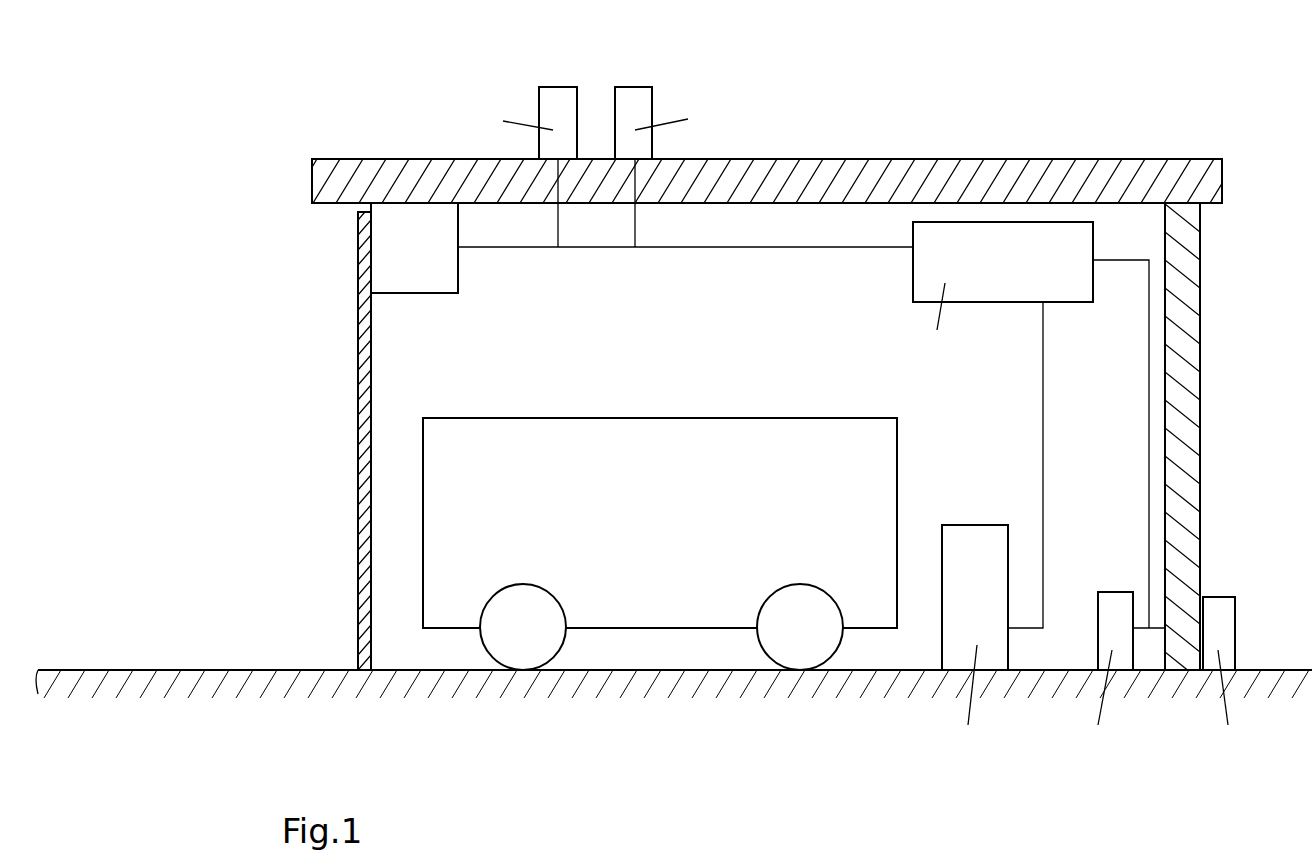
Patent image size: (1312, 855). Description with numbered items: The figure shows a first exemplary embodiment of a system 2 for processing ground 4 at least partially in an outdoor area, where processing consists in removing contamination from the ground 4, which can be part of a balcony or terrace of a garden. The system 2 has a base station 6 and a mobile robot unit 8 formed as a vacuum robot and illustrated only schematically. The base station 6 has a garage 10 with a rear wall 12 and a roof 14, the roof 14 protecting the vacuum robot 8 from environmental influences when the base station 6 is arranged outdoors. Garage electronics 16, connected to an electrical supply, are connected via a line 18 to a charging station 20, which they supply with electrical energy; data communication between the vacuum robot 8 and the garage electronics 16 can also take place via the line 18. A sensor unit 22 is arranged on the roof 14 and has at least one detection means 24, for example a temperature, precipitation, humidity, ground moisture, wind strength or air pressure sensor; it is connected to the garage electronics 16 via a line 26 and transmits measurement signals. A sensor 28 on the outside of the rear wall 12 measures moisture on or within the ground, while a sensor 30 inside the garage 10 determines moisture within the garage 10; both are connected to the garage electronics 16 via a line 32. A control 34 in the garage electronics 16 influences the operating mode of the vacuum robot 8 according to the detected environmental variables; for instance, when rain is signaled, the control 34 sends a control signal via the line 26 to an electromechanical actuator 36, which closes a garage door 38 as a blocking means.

The system 2 is at (695, 768).
The ground 4 is at (196, 676).
The base station 6 is at (1161, 732).
The mobile robot unit 8 is at (652, 510).
The garage 10 is at (1200, 104).
The rear wall 12 is at (1202, 369).
The roof 14 is at (874, 178).
The garage electronics 16 is at (991, 275).
The line 18 is at (1043, 441).
The charging station 20 is at (975, 540).
The sensor unit 22 is at (506, 86).
The detection means 24 is at (633, 100).
The line 26 is at (715, 252).
The sensor 28 is at (1218, 612).
The sensor 30 is at (1117, 606).
The line 32 is at (1147, 418).
The control 34 is at (1103, 124).
The electromechanical actuator 36 is at (430, 320).
The garage door 38 is at (357, 429).